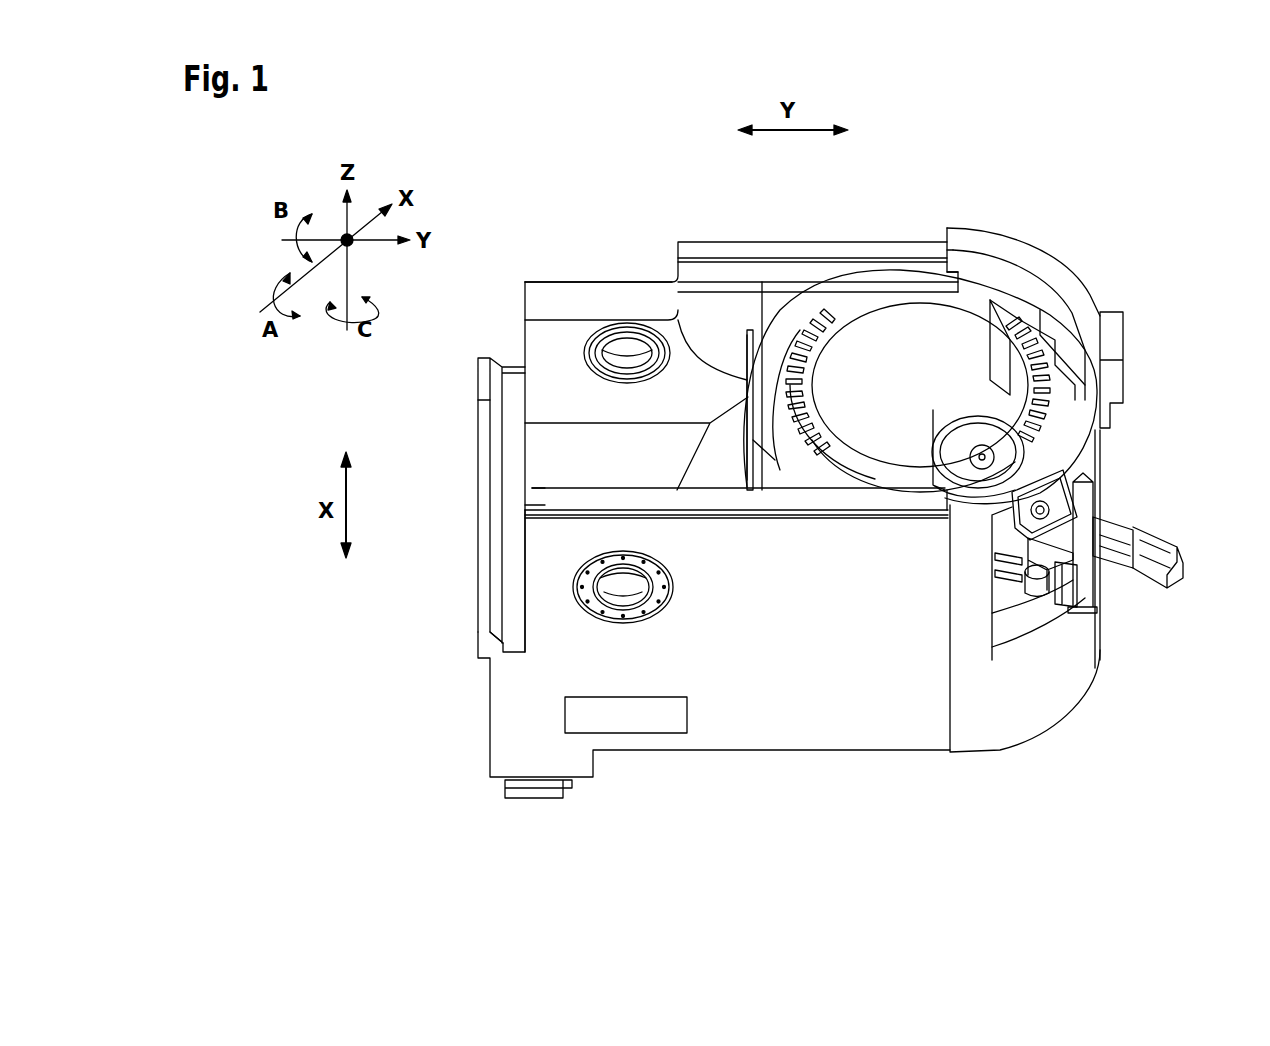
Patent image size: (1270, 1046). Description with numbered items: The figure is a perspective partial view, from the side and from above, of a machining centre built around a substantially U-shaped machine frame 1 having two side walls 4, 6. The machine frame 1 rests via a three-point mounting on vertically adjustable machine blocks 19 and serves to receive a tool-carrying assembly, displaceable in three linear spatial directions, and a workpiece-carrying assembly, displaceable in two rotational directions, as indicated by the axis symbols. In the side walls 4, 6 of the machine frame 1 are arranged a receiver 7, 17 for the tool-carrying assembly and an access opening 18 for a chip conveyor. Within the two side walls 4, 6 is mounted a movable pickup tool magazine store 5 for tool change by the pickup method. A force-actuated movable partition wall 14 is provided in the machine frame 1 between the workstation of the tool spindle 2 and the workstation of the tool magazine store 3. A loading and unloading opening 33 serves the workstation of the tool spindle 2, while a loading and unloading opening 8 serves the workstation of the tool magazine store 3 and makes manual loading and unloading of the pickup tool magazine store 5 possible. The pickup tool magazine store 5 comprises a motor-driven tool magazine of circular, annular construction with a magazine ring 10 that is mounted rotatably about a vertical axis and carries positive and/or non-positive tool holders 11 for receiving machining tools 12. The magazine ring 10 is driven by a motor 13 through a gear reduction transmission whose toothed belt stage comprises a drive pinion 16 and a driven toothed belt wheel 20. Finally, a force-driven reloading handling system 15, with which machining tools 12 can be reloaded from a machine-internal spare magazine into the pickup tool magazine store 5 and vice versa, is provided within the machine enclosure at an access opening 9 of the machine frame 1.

The machine frame 1 is at (482, 612).
The tool spindle 2 is at (613, 477).
The tool magazine store 3 is at (882, 305).
The side wall 4 is at (578, 298).
The pickup tool magazine store 5 is at (1047, 370).
The side wall 6 is at (552, 500).
The receiver 7 is at (613, 362).
The loading and unloading opening 8 is at (1027, 330).
The access opening 9 is at (1017, 613).
The magazine ring 10 is at (827, 483).
The tool holders 11 is at (790, 352).
The machining tools 12 is at (755, 445).
The motor 13 is at (1047, 553).
The partition wall 14 is at (748, 380).
The reloading handling system 15 is at (1133, 520).
The drive pinion 16 is at (1070, 490).
The receiver 17 is at (628, 588).
The access opening 18 is at (605, 713).
The machine blocks 19 is at (543, 797).
The driven toothed belt wheel 20 is at (1085, 407).
The loading and unloading opening 33 is at (468, 458).